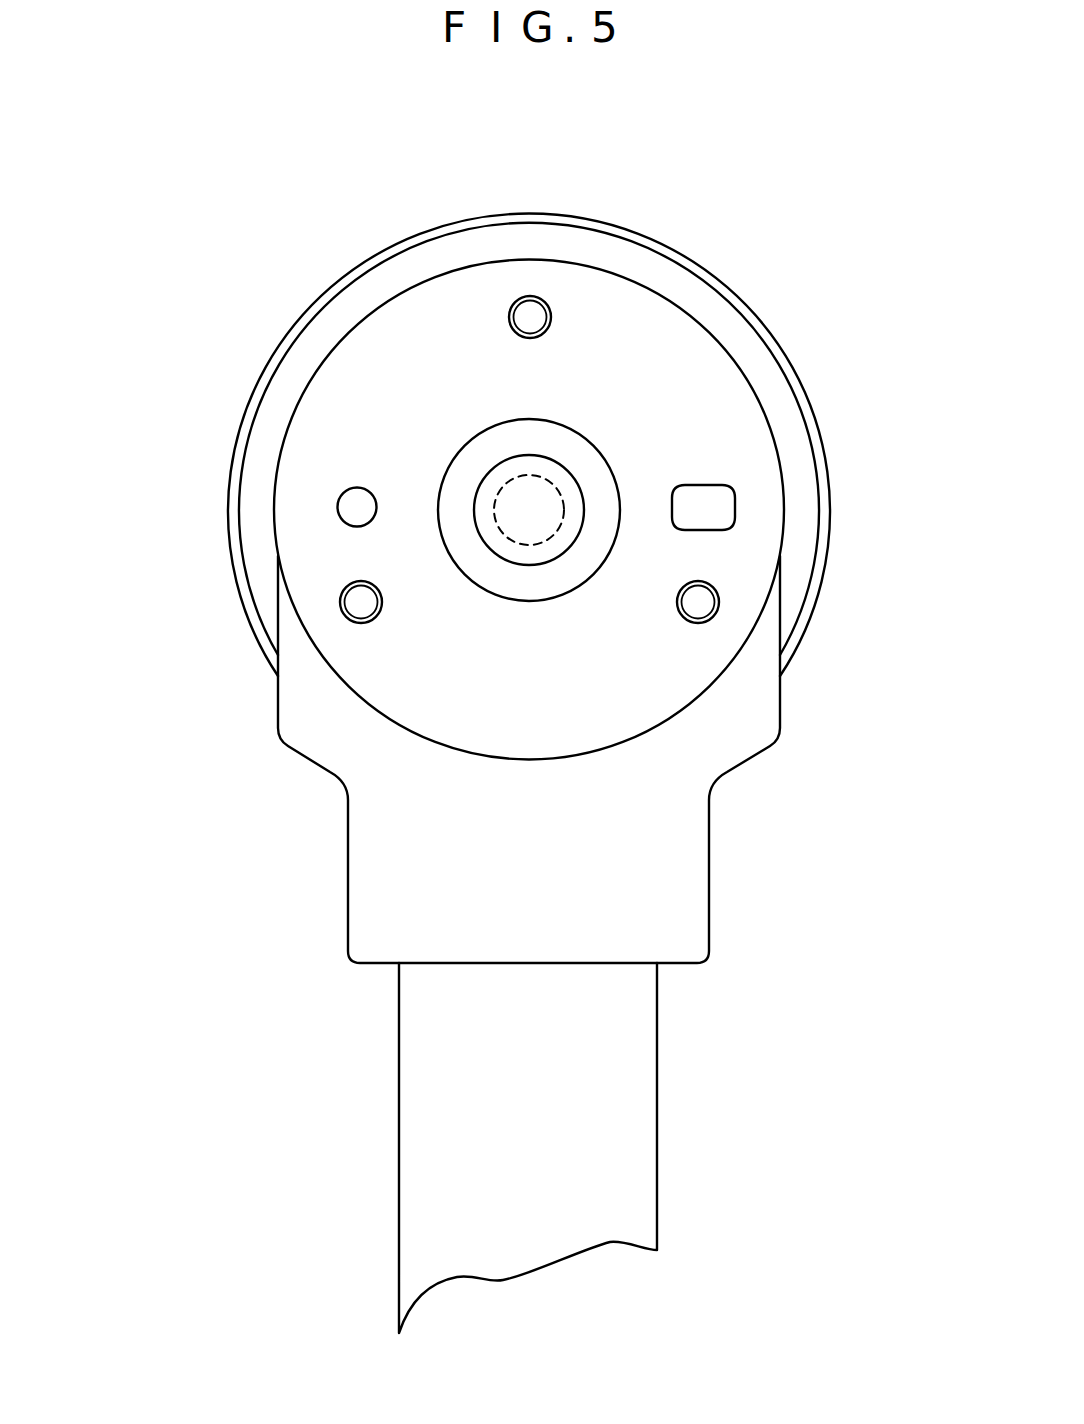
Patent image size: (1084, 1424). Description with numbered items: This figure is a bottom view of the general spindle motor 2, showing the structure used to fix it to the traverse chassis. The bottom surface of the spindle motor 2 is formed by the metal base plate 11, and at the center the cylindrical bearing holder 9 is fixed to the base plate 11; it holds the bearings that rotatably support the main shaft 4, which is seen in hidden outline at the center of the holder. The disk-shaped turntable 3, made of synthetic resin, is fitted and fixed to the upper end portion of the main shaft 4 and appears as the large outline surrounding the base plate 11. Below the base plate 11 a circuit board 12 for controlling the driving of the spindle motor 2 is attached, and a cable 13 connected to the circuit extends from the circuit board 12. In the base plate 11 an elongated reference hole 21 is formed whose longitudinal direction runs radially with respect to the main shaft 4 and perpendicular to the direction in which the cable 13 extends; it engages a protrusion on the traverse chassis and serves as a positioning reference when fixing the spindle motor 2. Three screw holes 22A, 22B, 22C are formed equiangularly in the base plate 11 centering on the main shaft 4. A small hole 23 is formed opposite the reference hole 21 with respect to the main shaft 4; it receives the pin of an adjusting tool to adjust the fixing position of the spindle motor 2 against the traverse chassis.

The spindle motor 2 is at (417, 228).
The turntable 3 is at (675, 256).
The main shaft 4 is at (496, 507).
The bearing holder 9 is at (478, 492).
The base plate 11 is at (743, 410).
The circuit board 12 is at (693, 912).
The cable 13 is at (642, 1115).
The reference hole 21 is at (736, 500).
The screw hole 22A is at (542, 298).
The screw hole 22B is at (339, 605).
The screw hole 22C is at (720, 605).
The small hole 23 is at (338, 503).